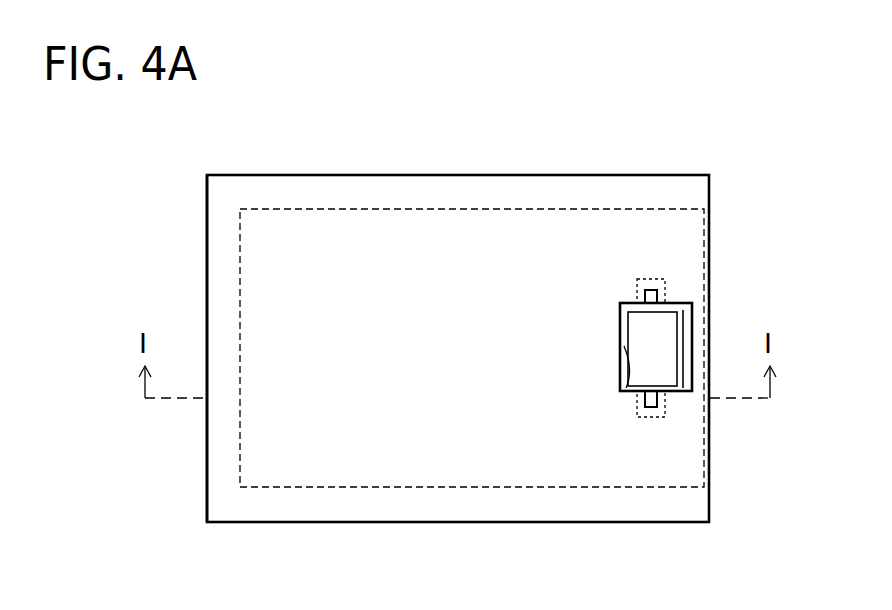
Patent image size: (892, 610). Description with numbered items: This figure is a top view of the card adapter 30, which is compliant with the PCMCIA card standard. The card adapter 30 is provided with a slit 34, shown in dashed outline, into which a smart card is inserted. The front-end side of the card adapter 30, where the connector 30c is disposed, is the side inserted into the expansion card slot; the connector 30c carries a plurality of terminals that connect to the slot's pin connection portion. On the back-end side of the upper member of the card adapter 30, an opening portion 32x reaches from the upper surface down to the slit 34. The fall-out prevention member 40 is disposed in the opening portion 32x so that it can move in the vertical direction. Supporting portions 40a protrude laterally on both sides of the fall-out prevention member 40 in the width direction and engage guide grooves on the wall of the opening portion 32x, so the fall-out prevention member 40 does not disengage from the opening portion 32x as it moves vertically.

The card adapter 30 is at (398, 142).
The connector 30c is at (207, 260).
The slit 34 is at (520, 247).
The fall-out prevention member 40 is at (660, 333).
The supporting portions 40a is at (657, 293).
The opening portion 32x is at (627, 392).